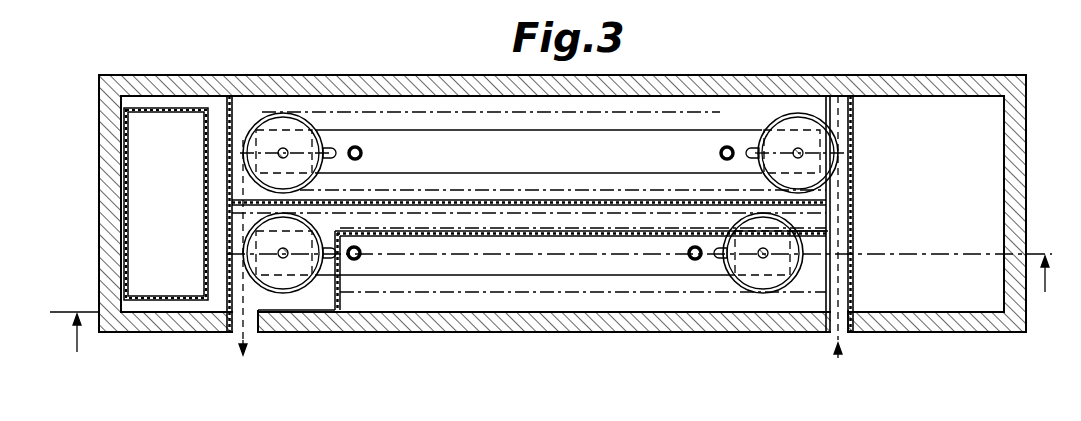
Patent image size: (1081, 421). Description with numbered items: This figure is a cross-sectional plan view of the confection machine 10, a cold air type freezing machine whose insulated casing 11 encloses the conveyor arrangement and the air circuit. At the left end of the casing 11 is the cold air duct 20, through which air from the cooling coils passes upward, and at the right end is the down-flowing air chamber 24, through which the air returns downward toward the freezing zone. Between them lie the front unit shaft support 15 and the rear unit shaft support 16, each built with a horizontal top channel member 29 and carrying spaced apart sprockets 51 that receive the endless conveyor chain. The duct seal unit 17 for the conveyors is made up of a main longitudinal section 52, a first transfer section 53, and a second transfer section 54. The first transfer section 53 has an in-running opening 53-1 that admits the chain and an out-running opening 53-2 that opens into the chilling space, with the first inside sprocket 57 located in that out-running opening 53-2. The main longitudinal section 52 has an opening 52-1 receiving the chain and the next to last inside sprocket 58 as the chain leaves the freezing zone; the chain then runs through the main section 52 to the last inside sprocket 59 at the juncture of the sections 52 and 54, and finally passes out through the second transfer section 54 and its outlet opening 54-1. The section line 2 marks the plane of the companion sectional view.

The section line 2 is at (556, 306).
The confection machine 10 is at (1065, 116).
The casing 11 is at (663, 333).
The front unit shaft support 15 is at (558, 277).
The rear unit shaft support 16 is at (478, 134).
The duct seal unit 17 is at (527, 198).
The cold air duct 20 is at (206, 208).
The down-flowing air chamber 24 is at (932, 219).
The top channel member 29 is at (520, 162).
The sprockets 51 is at (834, 136).
The main longitudinal section 52 is at (455, 238).
The opening 52-1 is at (812, 230).
The first transfer section 53 is at (854, 180).
The in-running opening 53-1 is at (843, 330).
The out-running opening 53-2 is at (835, 106).
The second transfer section 54 is at (340, 298).
The outlet opening 54-1 is at (252, 328).
The first inside sprocket 57 is at (775, 128).
The next to last inside sprocket 58 is at (776, 279).
The last inside sprocket 59 is at (272, 226).